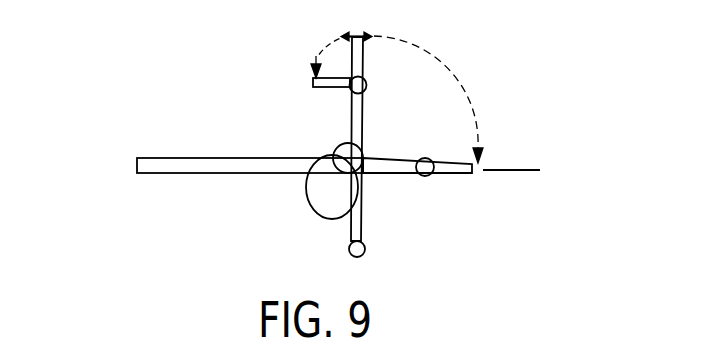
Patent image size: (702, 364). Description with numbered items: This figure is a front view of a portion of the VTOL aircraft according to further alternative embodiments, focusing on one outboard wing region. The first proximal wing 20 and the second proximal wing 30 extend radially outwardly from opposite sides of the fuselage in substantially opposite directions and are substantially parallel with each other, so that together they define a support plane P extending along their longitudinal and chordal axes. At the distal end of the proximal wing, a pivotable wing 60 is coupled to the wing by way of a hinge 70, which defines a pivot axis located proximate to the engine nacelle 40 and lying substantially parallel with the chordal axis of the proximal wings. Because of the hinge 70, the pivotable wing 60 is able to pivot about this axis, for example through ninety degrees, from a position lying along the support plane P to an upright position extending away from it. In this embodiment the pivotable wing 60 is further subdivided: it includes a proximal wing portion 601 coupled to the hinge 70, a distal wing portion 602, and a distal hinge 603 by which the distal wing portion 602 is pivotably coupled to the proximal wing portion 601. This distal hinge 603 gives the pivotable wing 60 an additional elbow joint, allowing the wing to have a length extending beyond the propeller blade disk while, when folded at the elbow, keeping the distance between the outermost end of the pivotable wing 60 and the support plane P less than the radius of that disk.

The first proximal wing 20 is at (209, 160).
The second proximal wing 30 is at (137, 170).
The engine nacelle 40 is at (324, 194).
The pivotable wing 60 is at (360, 58).
The proximal wing portion 601 is at (352, 125).
The distal wing portion 602 is at (312, 81).
The distal hinge 603 is at (351, 65).
The hinge 70 is at (361, 149).
The support plane P is at (523, 170).